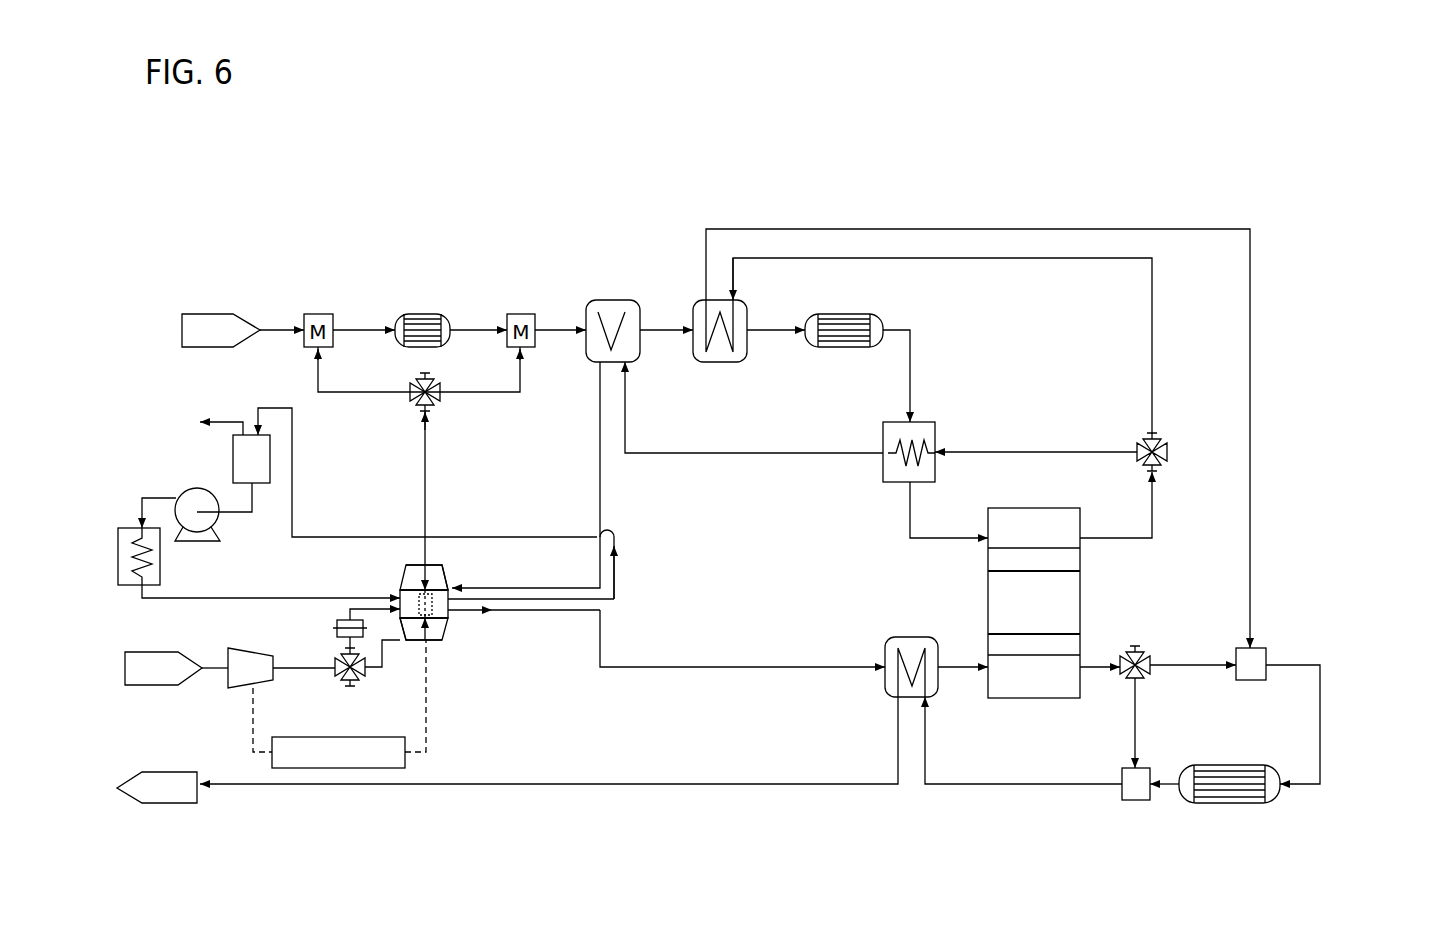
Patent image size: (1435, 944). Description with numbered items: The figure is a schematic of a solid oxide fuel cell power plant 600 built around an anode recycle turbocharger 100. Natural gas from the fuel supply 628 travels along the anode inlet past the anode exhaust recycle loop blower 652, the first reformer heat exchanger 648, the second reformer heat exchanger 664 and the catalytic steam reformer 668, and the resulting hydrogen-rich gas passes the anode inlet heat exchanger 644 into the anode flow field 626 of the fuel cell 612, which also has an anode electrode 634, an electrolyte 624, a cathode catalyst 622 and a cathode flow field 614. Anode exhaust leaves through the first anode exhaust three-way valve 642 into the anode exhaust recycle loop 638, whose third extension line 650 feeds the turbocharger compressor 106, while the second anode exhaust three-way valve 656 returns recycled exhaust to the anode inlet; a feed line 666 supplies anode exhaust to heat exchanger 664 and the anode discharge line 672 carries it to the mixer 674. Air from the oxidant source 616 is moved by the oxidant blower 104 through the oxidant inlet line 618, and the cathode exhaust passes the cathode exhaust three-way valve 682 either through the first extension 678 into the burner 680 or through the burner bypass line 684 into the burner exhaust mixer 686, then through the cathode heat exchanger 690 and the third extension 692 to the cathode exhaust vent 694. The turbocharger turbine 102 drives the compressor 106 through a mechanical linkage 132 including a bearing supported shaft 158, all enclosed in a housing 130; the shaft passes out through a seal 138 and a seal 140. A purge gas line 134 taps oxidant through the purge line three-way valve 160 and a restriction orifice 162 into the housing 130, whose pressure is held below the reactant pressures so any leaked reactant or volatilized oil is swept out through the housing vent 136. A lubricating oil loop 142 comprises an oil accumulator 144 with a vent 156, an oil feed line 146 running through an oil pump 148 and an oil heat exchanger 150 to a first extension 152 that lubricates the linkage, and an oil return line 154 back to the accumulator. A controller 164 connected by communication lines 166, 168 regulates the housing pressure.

The solid oxide fuel cell power plant 600 is at (1305, 188).
The fuel supply 628 is at (233, 313).
The anode exhaust recycle loop blower 652 is at (403, 313).
The first reformer heat exchanger 648 is at (612, 300).
The second reformer heat exchanger 664 is at (725, 362).
The catalytic steam reformer 668 is at (840, 347).
The anode inlet heat exchanger 644 is at (883, 468).
The first anode exhaust three-way valve 642 is at (1154, 438).
The heat exchanger anode discharge line 672 is at (1037, 229).
The second reformer heat exchanger feed line 666 is at (1015, 258).
The anode exhaust recycle loop 638 is at (995, 382).
The solid oxide fuel cell 612 is at (1133, 584).
The anode flow field 626 is at (1040, 528).
The anode electrode 634 is at (988, 555).
The electrolyte 624 is at (988, 595).
The cathode catalyst 622 is at (1082, 645).
The cathode flow field 614 is at (1015, 680).
The cathode heat exchanger 690 is at (885, 690).
The cathode exhaust three-way valve 682 is at (1145, 680).
The mixer 674 is at (1262, 648).
The first extension of cathode exhaust line 678 is at (1320, 700).
The burner 680 is at (1245, 765).
The burner exhaust mixer 686 is at (1122, 795).
The burner bypass line 684 is at (1135, 722).
The third extension of cathode exhaust line 692 is at (655, 784).
The cathode exhaust vent 694 is at (160, 805).
The third extension line of anode recycle loop 650 is at (600, 487).
The second anode exhaust three-way valve 656 is at (420, 407).
The turbocharger seal 140 is at (432, 590).
The oil accumulator 144 is at (237, 462).
The vent 156 is at (215, 422).
The oil return line 154 is at (290, 408).
The oil feed line 146 is at (252, 512).
The oil pump 148 is at (190, 492).
The oil heat exchanger 150 is at (118, 585).
The first extension of oil feed line 152 is at (165, 598).
The lubricating oil loop 142 is at (255, 548).
The anode recycle turbocharger 100 is at (458, 578).
The turbocharger compressor 106 is at (405, 565).
The turbocharger turbine 102 is at (442, 640).
The bearing supported shaft 158 is at (398, 590).
The turbocharger seal 138 is at (440, 620).
The housing 130 is at (500, 588).
The mechanical linkage 132 is at (495, 600).
The housing vent 136 is at (560, 610).
The purge gas line 134 is at (350, 607).
The restriction orifice 162 is at (337, 629).
The purge line three-way valve 160 is at (355, 683).
The oxidant source 616 is at (155, 656).
The oxidant inlet line 618 is at (215, 672).
The oxidant blower 104 is at (265, 688).
The communication line 166 is at (253, 705).
The controller 164 is at (365, 770).
The communication line 168 is at (428, 690).